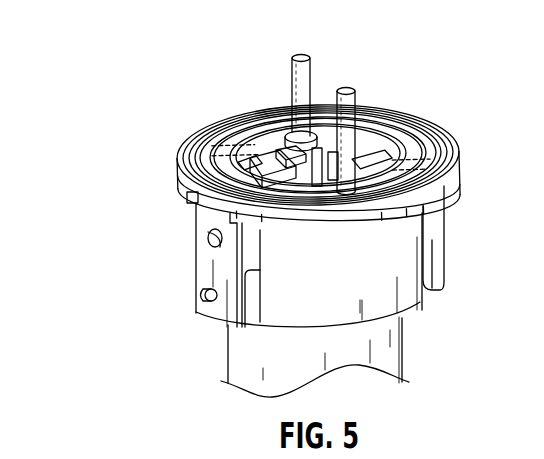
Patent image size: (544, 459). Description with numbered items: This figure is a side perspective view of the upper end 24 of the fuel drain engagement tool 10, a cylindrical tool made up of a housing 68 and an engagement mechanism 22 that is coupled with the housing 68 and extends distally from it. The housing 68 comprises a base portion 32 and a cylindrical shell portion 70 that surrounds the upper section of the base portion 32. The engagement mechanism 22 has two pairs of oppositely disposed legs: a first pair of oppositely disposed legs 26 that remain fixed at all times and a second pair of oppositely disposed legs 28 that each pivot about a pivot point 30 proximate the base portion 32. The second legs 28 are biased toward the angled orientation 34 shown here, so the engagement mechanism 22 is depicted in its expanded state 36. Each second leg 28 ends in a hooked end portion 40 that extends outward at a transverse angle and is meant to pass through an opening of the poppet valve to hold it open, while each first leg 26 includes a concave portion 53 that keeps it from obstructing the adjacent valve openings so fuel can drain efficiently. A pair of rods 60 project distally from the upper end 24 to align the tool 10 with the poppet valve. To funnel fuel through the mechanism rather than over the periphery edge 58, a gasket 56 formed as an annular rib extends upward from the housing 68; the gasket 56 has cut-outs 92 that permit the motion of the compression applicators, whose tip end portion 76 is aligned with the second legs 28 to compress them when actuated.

The fuel drain engagement tool 10 is at (441, 71).
The engagement mechanism 22 is at (316, 122).
The upper end 24 is at (173, 147).
The first pair of oppositely disposed legs 26 is at (282, 121).
The second pair of oppositely disposed legs 28 is at (288, 142).
The pivot point 30 is at (362, 133).
The base portion 32 is at (237, 357).
The angled orientation 34 is at (371, 111).
The expanded state 36 is at (318, 117).
The hooked end portion 40 is at (257, 156).
The concave portion 53 is at (322, 168).
The gasket 56 is at (203, 119).
The periphery edge 58 is at (460, 146).
The rods 60 is at (300, 54).
The housing 68 is at (427, 337).
The cylindrical shell portion 70 is at (283, 283).
The tip end portion 76 is at (275, 173).
The cut-outs 92 is at (190, 202).